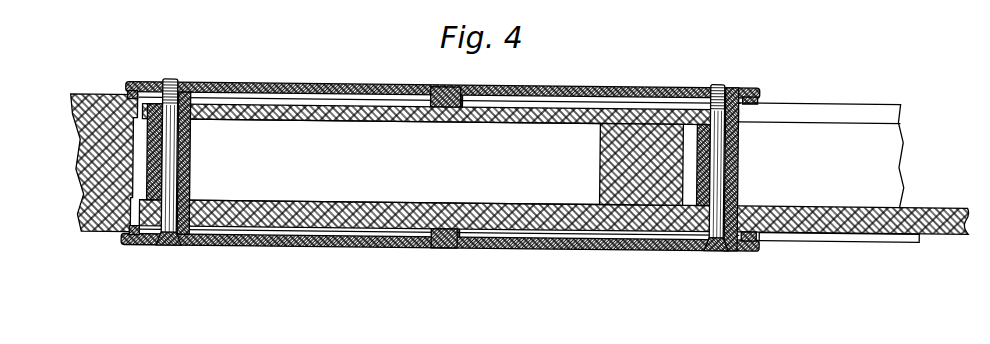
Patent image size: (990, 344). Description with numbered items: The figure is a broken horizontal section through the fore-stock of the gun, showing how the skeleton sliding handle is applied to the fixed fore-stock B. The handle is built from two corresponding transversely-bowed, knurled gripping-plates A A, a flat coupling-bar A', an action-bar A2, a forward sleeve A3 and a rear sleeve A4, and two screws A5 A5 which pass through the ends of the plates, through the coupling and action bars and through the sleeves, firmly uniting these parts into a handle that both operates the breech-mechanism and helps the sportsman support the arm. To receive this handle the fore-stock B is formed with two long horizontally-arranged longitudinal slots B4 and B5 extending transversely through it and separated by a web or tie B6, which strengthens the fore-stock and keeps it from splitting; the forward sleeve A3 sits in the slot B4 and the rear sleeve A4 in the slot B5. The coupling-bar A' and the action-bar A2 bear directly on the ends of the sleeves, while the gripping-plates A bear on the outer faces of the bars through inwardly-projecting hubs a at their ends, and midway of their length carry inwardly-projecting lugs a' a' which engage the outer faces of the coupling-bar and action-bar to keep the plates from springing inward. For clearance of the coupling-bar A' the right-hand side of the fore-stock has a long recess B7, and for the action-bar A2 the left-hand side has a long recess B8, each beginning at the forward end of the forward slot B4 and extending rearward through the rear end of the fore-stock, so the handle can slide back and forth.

The gripping-plate A is at (441, 170).
The coupling-bar A' is at (440, 89).
The action-bar A2 is at (347, 251).
The forward sleeve A3 is at (192, 168).
The rear sleeve A4 is at (741, 166).
The screw A5 is at (707, 250).
The inwardly-projecting hub a is at (449, 170).
The inwardly-projecting lug a' is at (448, 167).
The fore-stock B is at (100, 228).
The forward slot B4 is at (395, 161).
The rear slot B5 is at (821, 155).
The web or tie B6 is at (603, 168).
The recess B7 is at (838, 121).
The recess B8 is at (812, 240).